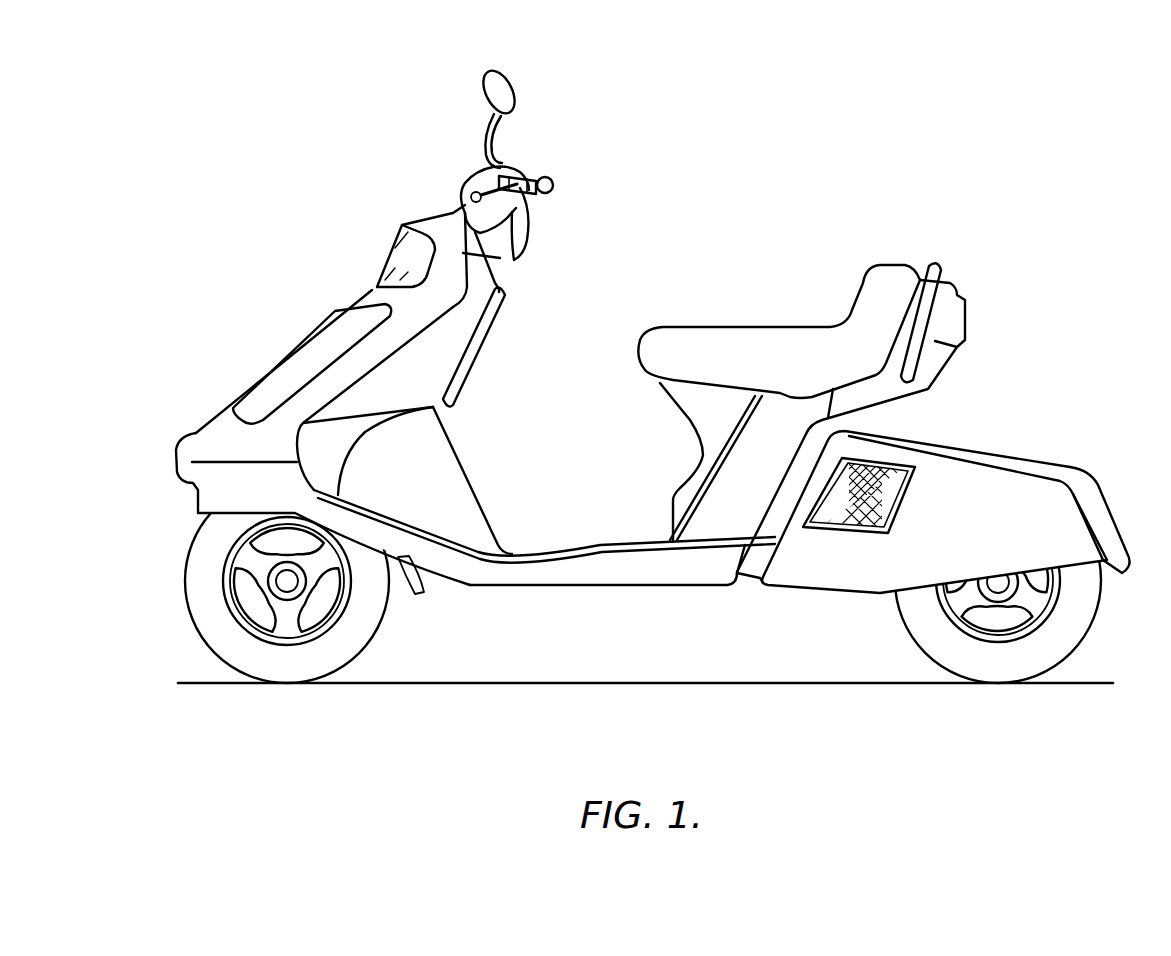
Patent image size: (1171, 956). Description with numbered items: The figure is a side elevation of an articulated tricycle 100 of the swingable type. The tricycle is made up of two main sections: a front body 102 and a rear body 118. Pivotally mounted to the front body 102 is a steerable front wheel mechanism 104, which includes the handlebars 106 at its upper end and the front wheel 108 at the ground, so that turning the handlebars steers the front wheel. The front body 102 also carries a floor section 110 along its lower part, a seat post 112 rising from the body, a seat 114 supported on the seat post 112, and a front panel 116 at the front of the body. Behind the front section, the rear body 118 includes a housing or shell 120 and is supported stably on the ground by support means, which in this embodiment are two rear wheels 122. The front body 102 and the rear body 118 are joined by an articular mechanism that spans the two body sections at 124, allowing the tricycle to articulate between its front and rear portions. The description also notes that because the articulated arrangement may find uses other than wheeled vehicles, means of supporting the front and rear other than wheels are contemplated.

The articulated tricycle 100 is at (744, 272).
The front body 102 is at (462, 448).
The steerable front wheel mechanism 104 is at (521, 160).
The handlebars 106 is at (555, 186).
The front wheel 108 is at (210, 590).
The floor section 110 is at (627, 575).
The seat post 112 is at (727, 497).
The seat 114 is at (790, 343).
The front panel 116 is at (376, 293).
The rear body 118 is at (1039, 460).
The housing or shell 120 is at (1092, 503).
The rear wheels 122 is at (1060, 646).
The articular mechanism location 124 is at (752, 580).